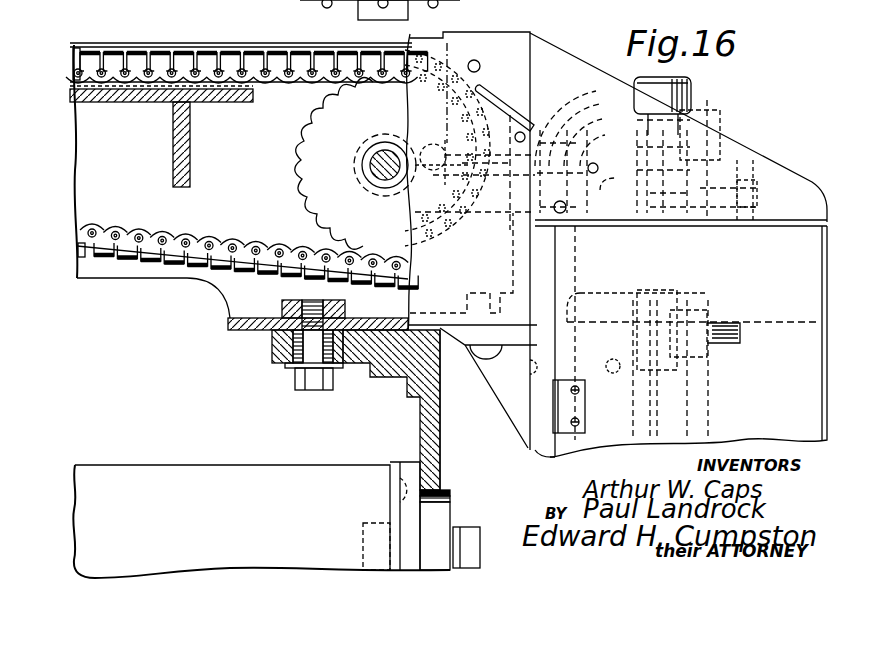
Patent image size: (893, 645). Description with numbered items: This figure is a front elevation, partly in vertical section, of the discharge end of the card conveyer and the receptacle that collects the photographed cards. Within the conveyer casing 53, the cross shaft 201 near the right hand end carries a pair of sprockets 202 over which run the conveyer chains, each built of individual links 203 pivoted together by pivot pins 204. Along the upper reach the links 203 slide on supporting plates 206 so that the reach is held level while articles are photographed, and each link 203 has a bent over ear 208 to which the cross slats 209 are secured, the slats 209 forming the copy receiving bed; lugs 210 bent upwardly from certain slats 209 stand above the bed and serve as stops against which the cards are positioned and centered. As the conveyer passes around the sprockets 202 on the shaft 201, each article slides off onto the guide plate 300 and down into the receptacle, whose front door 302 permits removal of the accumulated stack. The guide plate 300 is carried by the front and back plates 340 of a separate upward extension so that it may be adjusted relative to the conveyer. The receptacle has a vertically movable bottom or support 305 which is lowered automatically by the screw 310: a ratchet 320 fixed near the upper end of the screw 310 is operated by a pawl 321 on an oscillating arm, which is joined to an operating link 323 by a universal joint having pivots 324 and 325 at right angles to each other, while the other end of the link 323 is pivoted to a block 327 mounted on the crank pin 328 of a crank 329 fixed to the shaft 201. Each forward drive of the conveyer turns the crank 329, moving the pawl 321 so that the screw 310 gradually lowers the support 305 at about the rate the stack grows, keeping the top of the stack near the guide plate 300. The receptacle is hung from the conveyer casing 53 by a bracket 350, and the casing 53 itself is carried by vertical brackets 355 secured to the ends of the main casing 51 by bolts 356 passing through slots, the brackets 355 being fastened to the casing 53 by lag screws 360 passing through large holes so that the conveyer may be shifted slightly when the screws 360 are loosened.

The main casing 51 is at (205, 465).
The conveyer casing 53 is at (243, 331).
The cross shaft 201 is at (370, 131).
The sprocket 202 is at (295, 156).
The link 203 is at (120, 88).
The pivot pin 204 is at (394, 104).
The supporting plate 206 is at (277, 112).
The ear 208 is at (188, 265).
The slat 209 is at (238, 55).
The lug 210 is at (125, 45).
The guide plate 300 is at (505, 92).
The door 302 is at (678, 341).
The bottom or support 305 is at (754, 322).
The screw 310 is at (650, 126).
The ratchet 320 is at (630, 170).
The pawl 321 is at (757, 203).
The operating link 323 is at (553, 115).
The pivot 324 is at (718, 125).
The pivot 325 is at (718, 177).
The block 327 is at (442, 178).
The crank pin 328 is at (447, 148).
The crank 329 is at (385, 178).
The front and back plates 340 is at (757, 162).
The bracket 350 is at (500, 388).
The vertical bracket 355 is at (445, 467).
The bolt 356 is at (490, 524).
The lag screw 360 is at (294, 378).